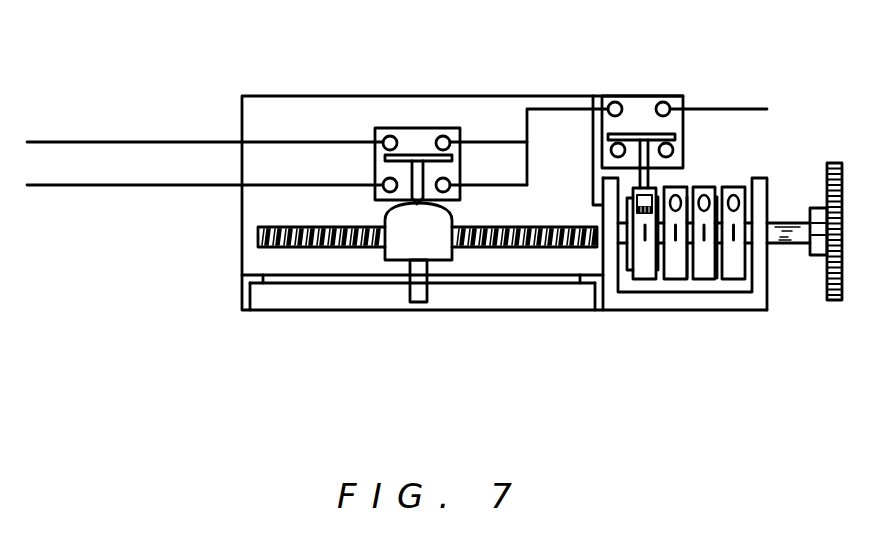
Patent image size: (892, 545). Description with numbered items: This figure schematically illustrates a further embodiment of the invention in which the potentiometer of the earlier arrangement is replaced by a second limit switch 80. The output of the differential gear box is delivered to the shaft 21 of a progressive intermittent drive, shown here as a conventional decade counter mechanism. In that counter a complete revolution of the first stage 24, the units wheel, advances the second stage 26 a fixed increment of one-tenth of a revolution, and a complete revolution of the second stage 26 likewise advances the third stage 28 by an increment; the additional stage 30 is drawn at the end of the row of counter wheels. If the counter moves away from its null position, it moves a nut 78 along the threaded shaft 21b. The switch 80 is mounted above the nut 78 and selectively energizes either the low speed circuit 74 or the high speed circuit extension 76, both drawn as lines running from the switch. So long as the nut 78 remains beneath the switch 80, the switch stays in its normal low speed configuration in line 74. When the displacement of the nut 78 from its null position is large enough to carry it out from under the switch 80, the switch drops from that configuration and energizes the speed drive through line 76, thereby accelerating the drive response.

The low speed circuit 74 is at (123, 142).
The high speed circuit extension 76 is at (135, 187).
The second limit switch 80 is at (407, 140).
The threaded shaft 21b is at (258, 242).
The nut 78 is at (387, 262).
The counter wheel 30 is at (640, 280).
The third stage 28 is at (670, 280).
The second stage 26 is at (705, 280).
The first stage 24 is at (730, 280).
The shaft 21 is at (782, 223).